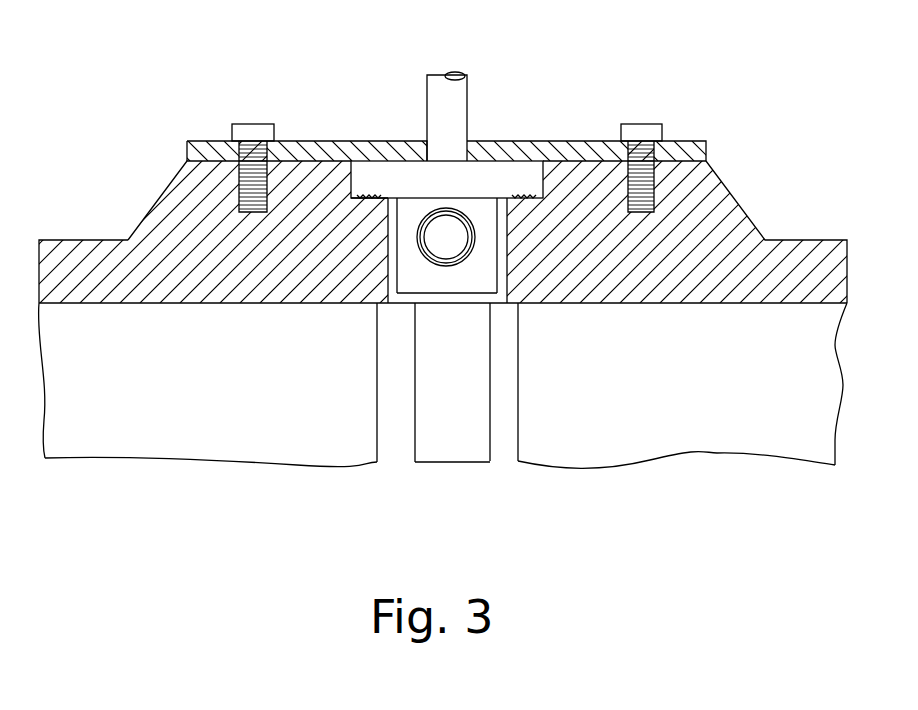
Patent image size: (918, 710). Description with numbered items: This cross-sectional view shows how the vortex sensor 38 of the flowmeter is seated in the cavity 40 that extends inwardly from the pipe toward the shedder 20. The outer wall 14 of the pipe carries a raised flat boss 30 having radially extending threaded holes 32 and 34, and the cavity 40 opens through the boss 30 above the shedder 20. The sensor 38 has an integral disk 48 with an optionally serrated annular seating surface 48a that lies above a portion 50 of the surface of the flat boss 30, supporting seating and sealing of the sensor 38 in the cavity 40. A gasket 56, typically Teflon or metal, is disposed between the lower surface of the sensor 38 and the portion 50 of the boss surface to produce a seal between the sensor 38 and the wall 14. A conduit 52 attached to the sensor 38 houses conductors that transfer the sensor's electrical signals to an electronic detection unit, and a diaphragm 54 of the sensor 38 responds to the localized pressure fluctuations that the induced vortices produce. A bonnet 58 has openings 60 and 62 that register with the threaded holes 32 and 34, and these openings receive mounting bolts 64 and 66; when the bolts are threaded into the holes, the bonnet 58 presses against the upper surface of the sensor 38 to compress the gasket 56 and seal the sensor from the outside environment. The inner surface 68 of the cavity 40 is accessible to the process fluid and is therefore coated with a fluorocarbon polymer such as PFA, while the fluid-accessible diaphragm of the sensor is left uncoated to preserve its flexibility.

The outer wall 14 is at (85, 243).
The shedder 20 is at (360, 378).
The flat boss 30 is at (459, 172).
The threaded hole 32 is at (243, 200).
The threaded hole 34 is at (655, 207).
The sensor 38 is at (491, 284).
The cavity 40 is at (502, 213).
The integral disk 48 is at (535, 152).
The serrated annular seating surface 48a is at (535, 212).
The portion of the surface of the flat boss 50 is at (359, 198).
The conduit 52 is at (468, 86).
The diaphragm 54 is at (458, 247).
The gasket 56 is at (362, 194).
The bonnet 58 is at (312, 141).
The opening 60 is at (240, 150).
The opening 62 is at (626, 150).
The mounting bolt 64 is at (250, 124).
The mounting bolt 66 is at (640, 124).
The inner surface of the cavity 68 is at (397, 220).